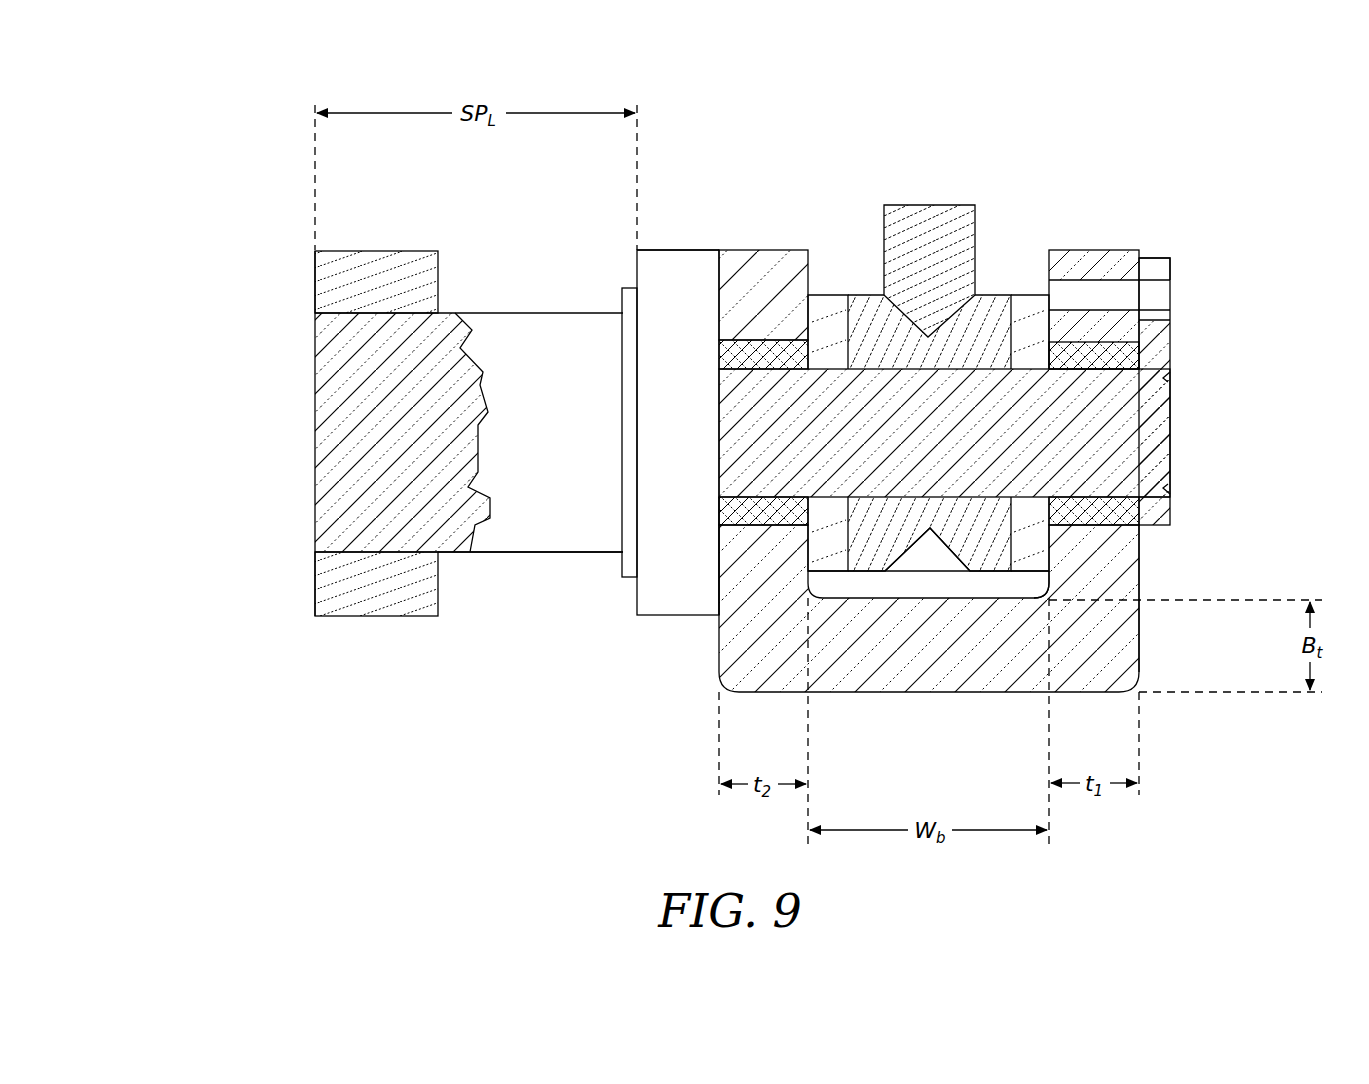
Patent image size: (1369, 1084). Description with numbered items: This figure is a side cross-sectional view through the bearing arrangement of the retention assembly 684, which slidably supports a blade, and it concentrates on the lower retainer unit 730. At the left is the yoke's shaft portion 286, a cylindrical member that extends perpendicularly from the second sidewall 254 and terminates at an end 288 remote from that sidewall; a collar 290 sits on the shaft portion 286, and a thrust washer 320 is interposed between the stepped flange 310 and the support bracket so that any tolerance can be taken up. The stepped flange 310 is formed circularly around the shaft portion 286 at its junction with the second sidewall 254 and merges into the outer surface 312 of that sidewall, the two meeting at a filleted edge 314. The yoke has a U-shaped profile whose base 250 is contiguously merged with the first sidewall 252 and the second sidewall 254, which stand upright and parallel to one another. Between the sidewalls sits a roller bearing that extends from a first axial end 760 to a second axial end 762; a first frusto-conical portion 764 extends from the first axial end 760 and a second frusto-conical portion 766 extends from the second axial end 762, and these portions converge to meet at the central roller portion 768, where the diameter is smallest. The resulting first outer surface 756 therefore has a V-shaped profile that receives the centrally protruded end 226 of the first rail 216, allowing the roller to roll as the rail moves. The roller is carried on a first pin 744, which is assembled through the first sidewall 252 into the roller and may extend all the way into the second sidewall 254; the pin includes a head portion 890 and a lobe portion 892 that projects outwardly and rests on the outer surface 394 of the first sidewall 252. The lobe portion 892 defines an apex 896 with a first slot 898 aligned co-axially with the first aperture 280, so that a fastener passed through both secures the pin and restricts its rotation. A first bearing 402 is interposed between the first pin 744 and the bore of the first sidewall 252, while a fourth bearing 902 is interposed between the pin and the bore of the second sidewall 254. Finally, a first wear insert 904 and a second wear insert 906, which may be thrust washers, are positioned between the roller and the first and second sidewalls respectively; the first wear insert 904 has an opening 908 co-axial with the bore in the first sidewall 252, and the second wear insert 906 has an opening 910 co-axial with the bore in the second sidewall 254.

The retention assembly 684 is at (166, 122).
The lower retainer unit 730 is at (228, 240).
The end 288 is at (315, 378).
The collar 290 is at (360, 617).
The shaft portion 286 is at (530, 555).
The thrust washer 320 is at (622, 570).
The stepped flange 310 is at (612, 266).
The second sidewall 254 is at (716, 298).
The outer surface 312 is at (719, 596).
The filleted edge 314 is at (719, 627).
The head portion 890 is at (1172, 425).
The base 250 is at (870, 695).
The second wear insert 906 is at (830, 598).
The first wear insert 904 is at (1034, 588).
The second axial end 762 is at (832, 312).
The second frusto-conical portion 766 is at (900, 310).
The first frusto-conical portion 764 is at (1030, 300).
The central roller portion 768 is at (955, 305).
The first rail 216 is at (976, 286).
The first outer surface 756 is at (955, 300).
The first axial end 760 is at (1070, 280).
The first aperture 280 is at (1135, 246).
The centrally protruded end 226 is at (1172, 316).
The lobe portion 892 is at (1172, 342).
The first sidewall 252 is at (1172, 258).
The apex 896 is at (1172, 262).
The first slot 898 is at (1172, 282).
The opening 908 is at (1172, 482).
The first pin 744 is at (1140, 555).
The first bearing 402 is at (1140, 545).
The outer surface 394 is at (1140, 575).
The opening 910 is at (829, 497).
The fourth bearing 902 is at (777, 527).